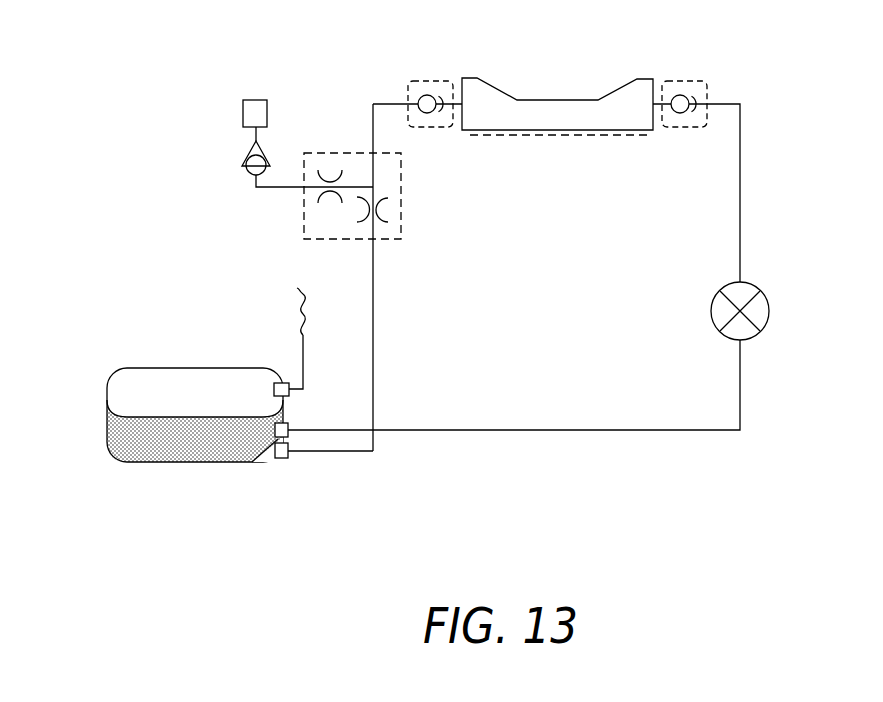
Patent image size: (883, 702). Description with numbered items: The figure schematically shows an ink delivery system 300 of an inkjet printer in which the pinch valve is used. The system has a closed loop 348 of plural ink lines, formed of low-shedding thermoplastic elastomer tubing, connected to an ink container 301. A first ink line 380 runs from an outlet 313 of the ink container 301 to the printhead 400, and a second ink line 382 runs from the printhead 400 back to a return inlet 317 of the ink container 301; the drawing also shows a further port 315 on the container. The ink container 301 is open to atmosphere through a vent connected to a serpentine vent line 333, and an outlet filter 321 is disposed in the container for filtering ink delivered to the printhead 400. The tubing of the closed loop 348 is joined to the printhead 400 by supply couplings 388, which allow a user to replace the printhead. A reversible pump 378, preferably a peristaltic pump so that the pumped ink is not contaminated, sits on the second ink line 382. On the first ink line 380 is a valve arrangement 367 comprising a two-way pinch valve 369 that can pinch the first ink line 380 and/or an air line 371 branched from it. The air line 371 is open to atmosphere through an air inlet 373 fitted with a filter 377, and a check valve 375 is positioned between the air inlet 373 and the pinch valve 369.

The ink delivery system 300 is at (803, 79).
The ink container 301 is at (140, 368).
The outlet 313 is at (290, 455).
The return port 315 is at (290, 425).
The return inlet 317 is at (276, 383).
The outlet filter 321 is at (270, 464).
The serpentine vent line 333 is at (297, 288).
The closed loop 348 is at (741, 231).
The valve arrangement 367 is at (264, 203).
The 2-way pinch valve 369 is at (400, 188).
The air line 371 is at (256, 187).
The air inlet 373 is at (259, 84).
The check valve 375 is at (246, 158).
The filter 377 is at (243, 112).
The reversible pump 378 is at (770, 306).
The first ink line 380 is at (374, 305).
The second ink line 382 is at (741, 392).
The supply couplings 388 is at (443, 80).
The printhead 400 is at (535, 98).